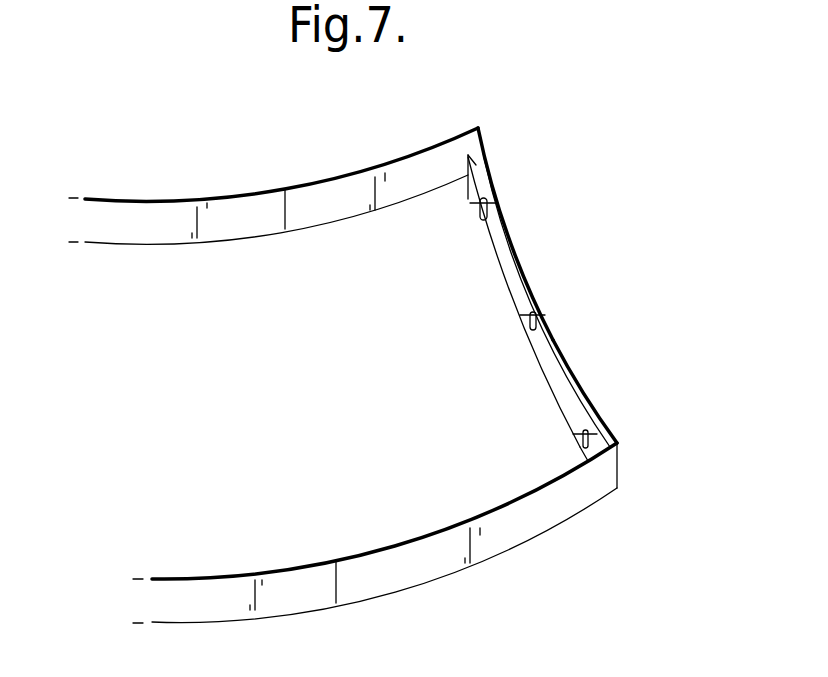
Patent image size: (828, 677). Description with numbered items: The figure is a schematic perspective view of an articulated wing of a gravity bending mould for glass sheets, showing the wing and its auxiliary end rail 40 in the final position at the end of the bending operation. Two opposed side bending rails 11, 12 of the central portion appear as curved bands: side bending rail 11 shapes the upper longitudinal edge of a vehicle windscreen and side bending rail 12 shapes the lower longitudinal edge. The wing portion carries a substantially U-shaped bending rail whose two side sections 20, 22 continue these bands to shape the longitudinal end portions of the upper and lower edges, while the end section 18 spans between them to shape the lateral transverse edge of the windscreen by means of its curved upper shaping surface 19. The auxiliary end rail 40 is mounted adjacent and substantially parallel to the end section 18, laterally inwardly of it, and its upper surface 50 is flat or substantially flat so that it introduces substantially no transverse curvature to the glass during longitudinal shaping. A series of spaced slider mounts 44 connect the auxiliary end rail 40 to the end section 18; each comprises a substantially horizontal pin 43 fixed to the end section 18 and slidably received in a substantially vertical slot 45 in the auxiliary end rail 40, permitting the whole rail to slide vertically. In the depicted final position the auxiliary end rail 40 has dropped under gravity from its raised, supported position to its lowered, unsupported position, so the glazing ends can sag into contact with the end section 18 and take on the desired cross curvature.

The side bending rail 11 is at (273, 217).
The side bending rail 12 is at (375, 555).
The side section 20 is at (330, 190).
The side section 22 is at (427, 563).
The auxiliary end rail 40 is at (541, 295).
The end section 18 is at (522, 243).
The curved upper shaping surface 19 is at (570, 358).
The upper surface 50 is at (552, 367).
The pin 43 is at (470, 203).
The slider mount 44 is at (593, 402).
The slot 45 is at (485, 203).